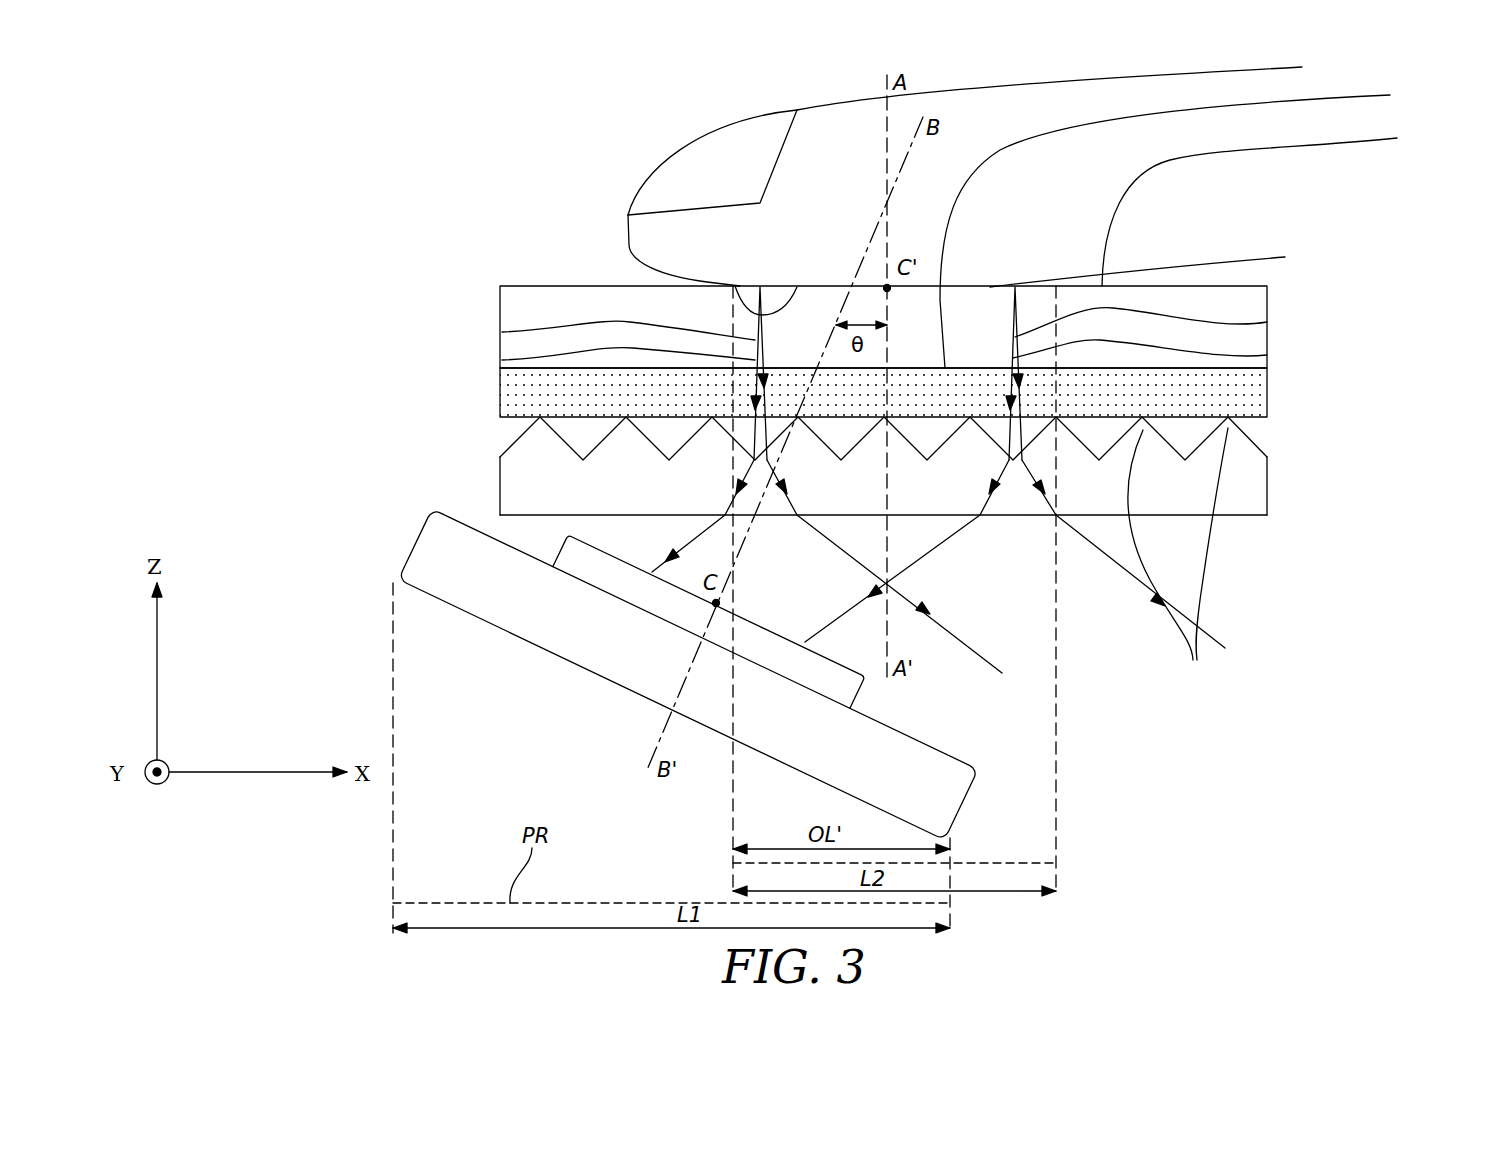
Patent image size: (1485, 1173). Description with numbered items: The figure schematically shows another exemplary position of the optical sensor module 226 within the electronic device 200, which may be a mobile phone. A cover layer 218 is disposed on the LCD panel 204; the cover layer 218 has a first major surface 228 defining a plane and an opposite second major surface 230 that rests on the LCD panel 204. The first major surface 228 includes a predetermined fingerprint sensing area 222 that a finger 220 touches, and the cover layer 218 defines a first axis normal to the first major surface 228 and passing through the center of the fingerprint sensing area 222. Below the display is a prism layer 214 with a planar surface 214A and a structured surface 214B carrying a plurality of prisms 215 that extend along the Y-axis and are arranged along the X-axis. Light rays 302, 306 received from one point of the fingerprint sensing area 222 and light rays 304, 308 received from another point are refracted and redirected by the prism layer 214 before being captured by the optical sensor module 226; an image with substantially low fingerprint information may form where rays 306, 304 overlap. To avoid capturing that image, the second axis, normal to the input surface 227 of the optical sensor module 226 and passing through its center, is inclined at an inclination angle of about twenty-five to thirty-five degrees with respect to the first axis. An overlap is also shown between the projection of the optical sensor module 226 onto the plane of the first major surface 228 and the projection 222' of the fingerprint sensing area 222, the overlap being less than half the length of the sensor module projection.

The electronic device 200 is at (1358, 238).
The LCD panel 204 is at (512, 407).
The prism layer 214 is at (515, 489).
The planar surface 214A is at (1243, 515).
The structured surface 214B is at (1257, 442).
The prisms 215 is at (1178, 560).
The cover layer 218 is at (512, 298).
The finger 220 is at (845, 110).
The predetermined fingerprint sensing area 222 is at (668, 254).
The projection of the predetermined fingerprint sensing area 222' is at (894, 823).
The optical sensor module 226 is at (396, 583).
The surface of the optical sensor module 227 is at (588, 553).
The first major surface 228 is at (1272, 207).
The second major surface 230 is at (1189, 226).
The light ray 302 is at (502, 332).
The light ray 304 is at (1267, 322).
The light ray 306 is at (502, 360).
The light ray 308 is at (1267, 355).